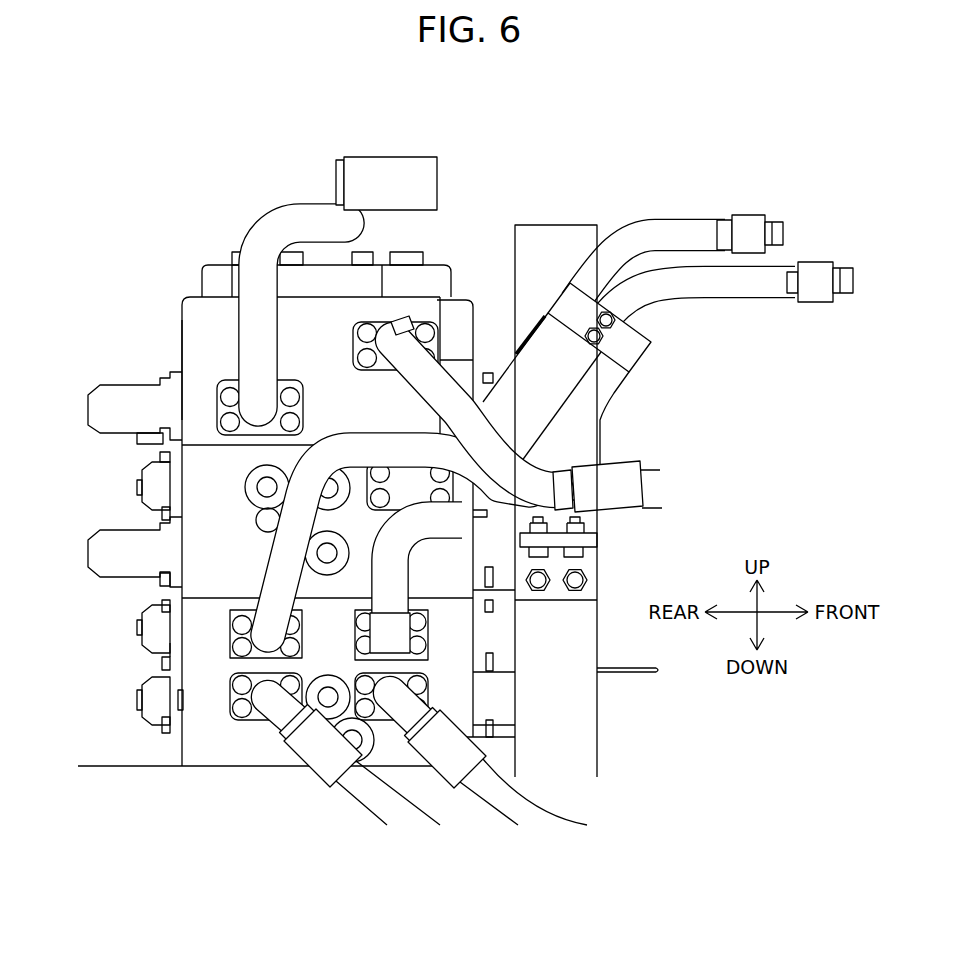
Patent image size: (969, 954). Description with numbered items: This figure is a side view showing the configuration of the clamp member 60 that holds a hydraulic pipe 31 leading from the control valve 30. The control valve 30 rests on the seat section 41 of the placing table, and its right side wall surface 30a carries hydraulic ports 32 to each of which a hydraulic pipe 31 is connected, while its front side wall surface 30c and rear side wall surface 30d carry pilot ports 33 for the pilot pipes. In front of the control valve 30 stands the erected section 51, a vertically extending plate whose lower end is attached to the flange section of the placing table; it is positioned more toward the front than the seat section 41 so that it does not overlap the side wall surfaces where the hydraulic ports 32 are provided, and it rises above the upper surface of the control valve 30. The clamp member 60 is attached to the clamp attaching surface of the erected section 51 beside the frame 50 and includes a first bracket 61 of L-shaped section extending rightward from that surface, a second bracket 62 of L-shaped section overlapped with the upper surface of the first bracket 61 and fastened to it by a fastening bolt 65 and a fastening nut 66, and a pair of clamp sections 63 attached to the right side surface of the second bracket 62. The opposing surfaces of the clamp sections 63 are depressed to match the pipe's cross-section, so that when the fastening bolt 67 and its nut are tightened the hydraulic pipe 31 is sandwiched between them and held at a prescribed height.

The control valve 30 is at (182, 313).
The right side wall surface 30a is at (205, 559).
The front side wall surface 30c is at (477, 333).
The rear side wall surface 30d is at (182, 345).
The hydraulic pipe 31 is at (291, 178).
The hydraulic port 32 is at (222, 410).
The pilot port 33 is at (110, 387).
The seat section 41 is at (110, 765).
The frame 50 is at (611, 712).
The erected section 51 is at (553, 230).
The clamp member 60 is at (595, 391).
The first bracket 61 is at (594, 580).
The second bracket 62 is at (600, 424).
The clamp section 63 is at (643, 347).
The fastening bolt 65 is at (588, 550).
The fastening nut 66 is at (588, 527).
The fastening bolt 67 is at (604, 336).